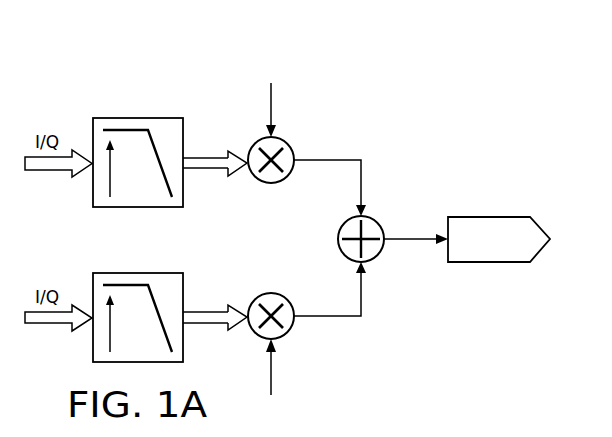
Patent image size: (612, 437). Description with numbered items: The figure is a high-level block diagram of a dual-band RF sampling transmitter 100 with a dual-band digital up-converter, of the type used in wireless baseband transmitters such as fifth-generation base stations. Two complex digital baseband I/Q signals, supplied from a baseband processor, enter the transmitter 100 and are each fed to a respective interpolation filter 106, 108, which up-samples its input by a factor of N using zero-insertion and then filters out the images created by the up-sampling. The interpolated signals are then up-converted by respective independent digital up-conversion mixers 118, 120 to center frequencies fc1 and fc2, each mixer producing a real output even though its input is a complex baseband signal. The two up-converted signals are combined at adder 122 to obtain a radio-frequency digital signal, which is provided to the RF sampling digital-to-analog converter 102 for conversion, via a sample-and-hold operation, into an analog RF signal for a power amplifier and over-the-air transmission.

The dual-band RF sampling transmitter 100 is at (452, 67).
The RF sampling digital-to-analog converter 102 is at (495, 216).
The interpolation filter 106 is at (135, 117).
The interpolation filter 108 is at (92, 350).
The digital up-conversion mixer 118 is at (269, 184).
The digital up-conversion mixer 120 is at (275, 293).
The adder 122 is at (374, 218).